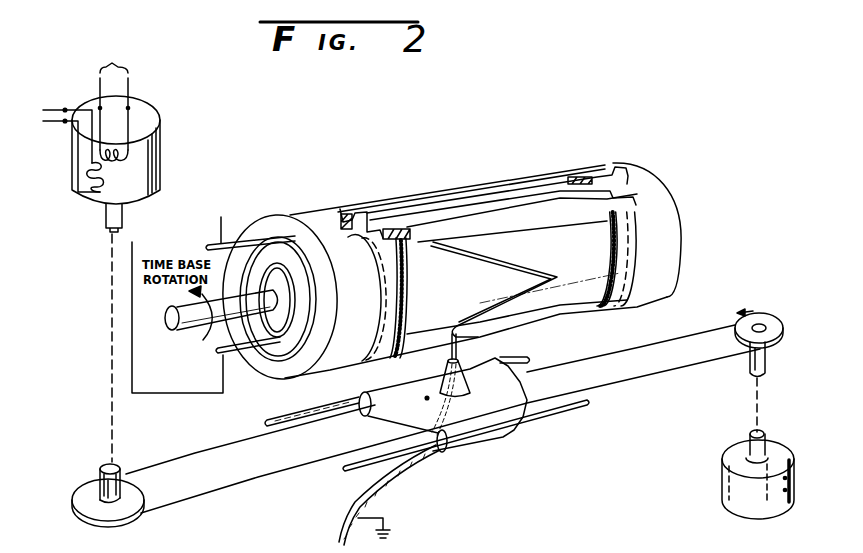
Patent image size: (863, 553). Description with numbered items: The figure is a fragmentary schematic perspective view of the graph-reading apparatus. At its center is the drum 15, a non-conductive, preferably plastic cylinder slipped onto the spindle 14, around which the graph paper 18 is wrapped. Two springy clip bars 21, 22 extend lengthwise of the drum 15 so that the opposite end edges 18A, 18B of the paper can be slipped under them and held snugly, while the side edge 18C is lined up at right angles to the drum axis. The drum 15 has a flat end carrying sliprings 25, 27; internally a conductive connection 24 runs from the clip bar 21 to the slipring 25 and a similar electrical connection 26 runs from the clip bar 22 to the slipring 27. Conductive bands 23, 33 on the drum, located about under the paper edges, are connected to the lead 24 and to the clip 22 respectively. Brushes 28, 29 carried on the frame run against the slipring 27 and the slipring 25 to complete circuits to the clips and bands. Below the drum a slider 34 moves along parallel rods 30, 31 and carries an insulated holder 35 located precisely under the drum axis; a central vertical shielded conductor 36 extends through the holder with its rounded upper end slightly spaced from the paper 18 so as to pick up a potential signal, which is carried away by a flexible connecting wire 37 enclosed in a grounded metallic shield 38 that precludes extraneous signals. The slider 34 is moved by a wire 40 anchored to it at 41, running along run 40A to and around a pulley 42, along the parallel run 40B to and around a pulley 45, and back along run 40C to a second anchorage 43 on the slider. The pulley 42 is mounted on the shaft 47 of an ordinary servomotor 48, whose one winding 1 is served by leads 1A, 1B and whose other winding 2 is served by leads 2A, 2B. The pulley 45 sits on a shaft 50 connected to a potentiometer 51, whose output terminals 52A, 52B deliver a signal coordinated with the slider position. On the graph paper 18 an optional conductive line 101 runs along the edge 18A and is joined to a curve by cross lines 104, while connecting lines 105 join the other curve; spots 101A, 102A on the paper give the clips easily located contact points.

The servomotor winding 1 is at (118, 160).
The winding lead 1A is at (128, 84).
The winding lead 1B is at (100, 82).
The servomotor winding 2 is at (101, 184).
The winding lead 2A is at (56, 108).
The winding lead 2B is at (53, 125).
The spindle 14 is at (182, 332).
The drum 15 is at (336, 229).
The graph paper 18 is at (640, 211).
The end edge of graph paper 18A is at (530, 193).
The end edge of graph paper 18B is at (493, 200).
The edge of graph paper 18C is at (640, 240).
The clip bar 21 is at (460, 223).
The clip bar 22 is at (420, 190).
The conductive band 23 is at (383, 312).
The conductive connection 24 is at (355, 270).
The slipring 25 is at (258, 262).
The electrical connection 26 is at (320, 227).
The slipring 27 is at (280, 237).
The brush 28 is at (201, 240).
The brush 29 is at (233, 356).
The rod 30 is at (527, 360).
The rod 31 is at (588, 404).
The conductive band 33 is at (625, 273).
The slider 34 is at (486, 430).
The insulated holder 35 is at (441, 378).
The electrical conductor 36 is at (459, 361).
The flexible connecting wire 37 is at (346, 546).
The shield 38 is at (383, 487).
The wire 40 is at (450, 408).
The wire run 40A is at (198, 453).
The wire run 40B is at (188, 496).
The wire run 40C is at (723, 320).
The anchorage 41 is at (427, 398).
The pulley 42 is at (90, 490).
The anchorage 43 is at (493, 385).
The pulley 45 is at (779, 325).
The shaft 47 is at (110, 322).
The servomotor 48 is at (147, 147).
The shaft 50 is at (764, 357).
The potentiometer 51 is at (727, 478).
The output terminal 52A is at (792, 472).
The output terminal 52B is at (792, 489).
The conductive line 101 is at (613, 268).
The spot 101A is at (583, 177).
The spot 102A is at (390, 228).
The cross line 104 is at (538, 234).
The connecting line 105 is at (431, 257).